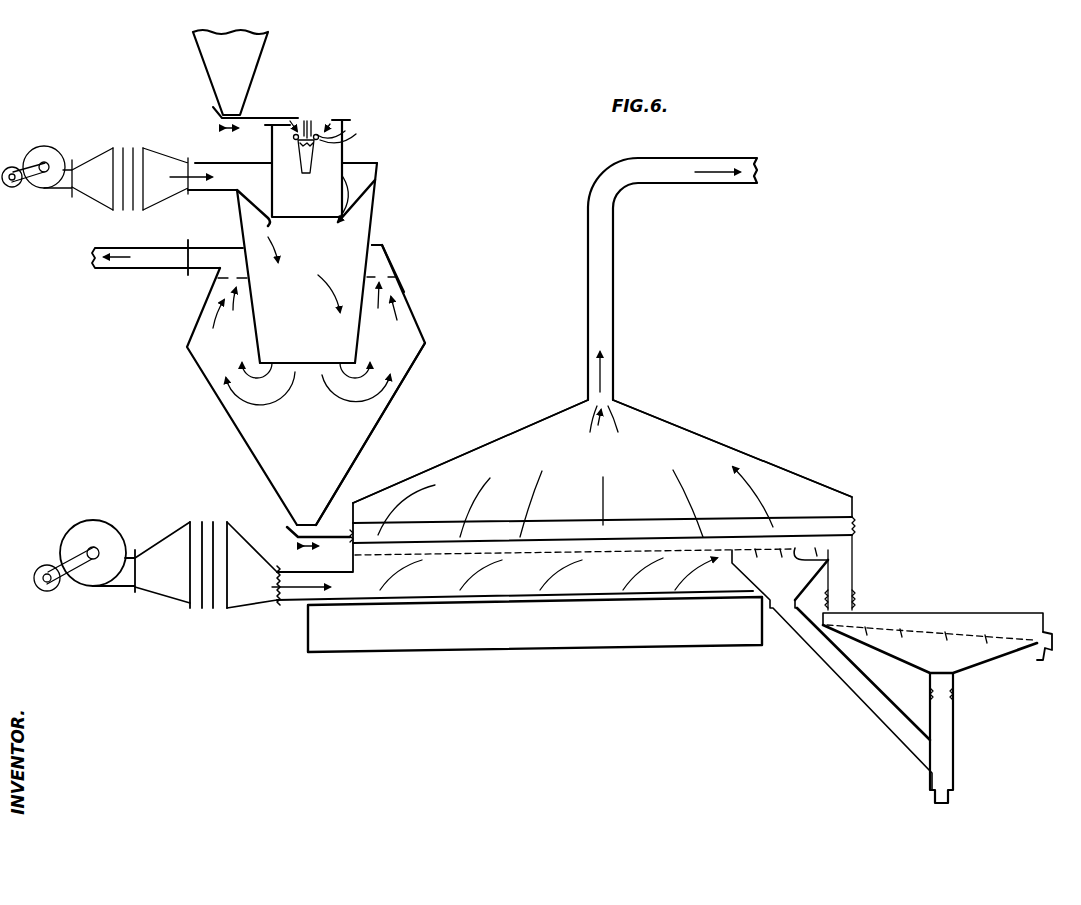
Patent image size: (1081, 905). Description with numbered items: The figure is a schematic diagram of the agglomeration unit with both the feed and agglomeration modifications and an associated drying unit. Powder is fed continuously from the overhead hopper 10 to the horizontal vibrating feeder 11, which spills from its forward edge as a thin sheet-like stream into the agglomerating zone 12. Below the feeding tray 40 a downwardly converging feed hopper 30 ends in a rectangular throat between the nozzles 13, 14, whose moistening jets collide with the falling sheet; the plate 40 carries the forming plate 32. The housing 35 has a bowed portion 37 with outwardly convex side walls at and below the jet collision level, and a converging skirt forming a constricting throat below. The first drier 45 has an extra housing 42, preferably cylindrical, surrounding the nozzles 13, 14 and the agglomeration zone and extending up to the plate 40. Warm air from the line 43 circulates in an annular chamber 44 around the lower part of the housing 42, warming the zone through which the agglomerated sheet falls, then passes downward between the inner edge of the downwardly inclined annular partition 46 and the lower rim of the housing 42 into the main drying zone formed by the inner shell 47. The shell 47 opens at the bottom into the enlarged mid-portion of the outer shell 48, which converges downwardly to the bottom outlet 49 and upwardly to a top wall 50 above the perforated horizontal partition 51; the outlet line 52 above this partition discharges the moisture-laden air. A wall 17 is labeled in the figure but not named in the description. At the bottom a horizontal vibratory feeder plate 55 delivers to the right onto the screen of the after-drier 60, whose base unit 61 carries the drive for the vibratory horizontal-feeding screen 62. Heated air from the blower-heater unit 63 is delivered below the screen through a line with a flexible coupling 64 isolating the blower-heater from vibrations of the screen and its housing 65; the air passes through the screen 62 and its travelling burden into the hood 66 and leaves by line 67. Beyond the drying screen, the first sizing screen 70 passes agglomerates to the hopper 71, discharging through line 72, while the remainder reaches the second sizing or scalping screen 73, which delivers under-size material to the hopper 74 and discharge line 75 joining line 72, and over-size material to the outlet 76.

The overhead hopper 10 is at (200, 52).
The horizontal vibrating feeder 11 is at (213, 112).
The agglomerating zone 12 is at (318, 150).
The nozzle 13 is at (292, 133).
The nozzle 14 is at (356, 134).
The settling hopper wall 17 is at (389, 413).
The feed hopper 30 is at (345, 130).
The forming plate 32 is at (311, 125).
The housing 35 is at (299, 162).
The bowed portion 37 is at (363, 561).
The feeding tray 40 is at (338, 118).
The extra housing 42 is at (344, 174).
The warm air line 43 is at (197, 163).
The annular chamber 44 is at (280, 222).
The first drier 45 is at (170, 328).
The downwardly inclined annular partition 46 is at (250, 204).
The inner shell 47 is at (378, 217).
The outer shell 48 is at (422, 337).
The bottom outlet 49 is at (308, 524).
The top wall 50 is at (380, 245).
The perforated horizontal partition 51 is at (399, 270).
The outlet line 52 is at (166, 250).
The horizontal vibratory feeder plate 55 is at (287, 527).
The after-drier 60 is at (747, 426).
The base unit 61 is at (360, 643).
The vibratory horizontal-feeding screen 62 is at (534, 600).
The blower-heater unit 63 is at (166, 589).
The flexible coupling 64 is at (283, 603).
The screen housing 65 is at (588, 598).
The hood 66 is at (777, 481).
The discharge line 67 is at (604, 296).
The first sizing screen 70 is at (828, 553).
The hopper 71 is at (813, 582).
The discharge line 72 is at (845, 682).
The second sizing or scalping screen 73 is at (928, 627).
The hopper 74 is at (972, 668).
The discharge line 75 is at (945, 715).
The outlet 76 is at (1035, 645).